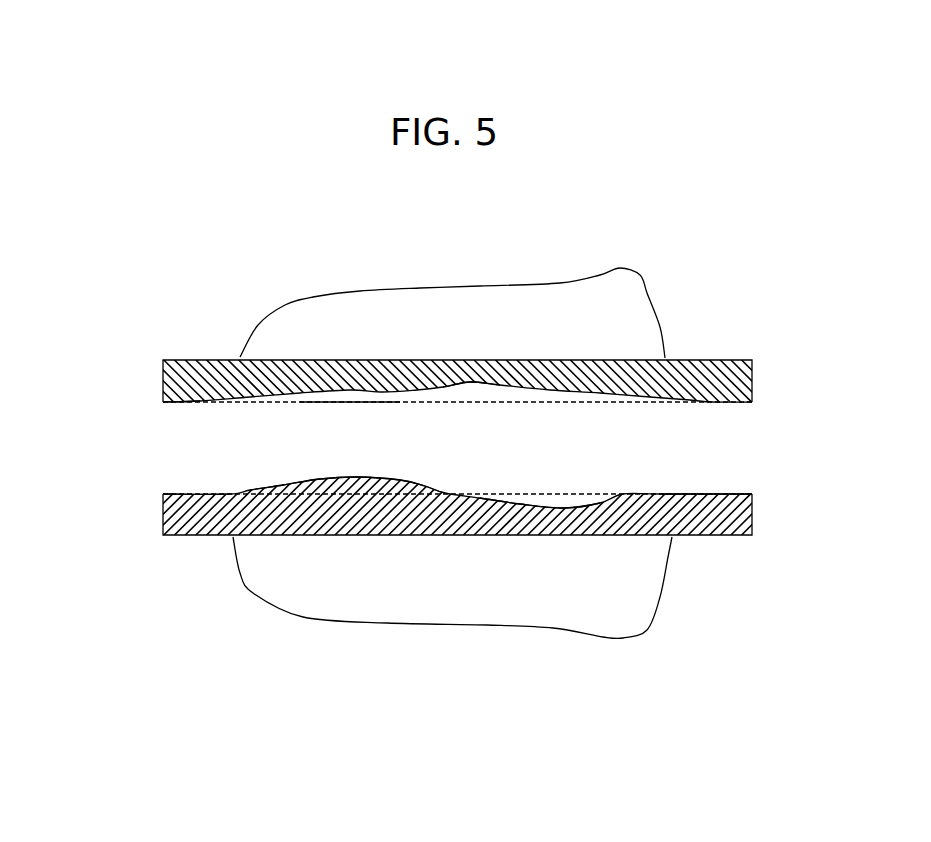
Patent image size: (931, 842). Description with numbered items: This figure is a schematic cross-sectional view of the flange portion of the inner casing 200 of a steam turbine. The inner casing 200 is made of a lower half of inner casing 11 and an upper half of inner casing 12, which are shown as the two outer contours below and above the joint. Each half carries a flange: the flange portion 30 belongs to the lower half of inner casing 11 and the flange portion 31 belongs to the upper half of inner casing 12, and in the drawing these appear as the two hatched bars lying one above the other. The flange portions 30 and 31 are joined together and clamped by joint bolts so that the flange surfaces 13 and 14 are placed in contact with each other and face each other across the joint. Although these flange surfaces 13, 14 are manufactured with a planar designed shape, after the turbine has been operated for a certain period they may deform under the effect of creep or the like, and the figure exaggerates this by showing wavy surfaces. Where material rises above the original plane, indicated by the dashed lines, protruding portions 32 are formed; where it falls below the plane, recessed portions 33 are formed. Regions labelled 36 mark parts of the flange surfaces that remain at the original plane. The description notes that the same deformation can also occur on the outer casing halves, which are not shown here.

The inner casing 200 is at (663, 282).
The lower half of inner casing 11 is at (307, 617).
The upper half of inner casing 12 is at (313, 297).
The flange surface 13 is at (202, 494).
The flange surface 14 is at (177, 403).
The flange portion of lower half of inner casing 30 is at (162, 518).
The flange portion of upper half of inner casing 31 is at (162, 381).
The protruding portion 32 is at (304, 483).
The recessed portion 33 is at (450, 402).
The flat portion 36 is at (343, 402).